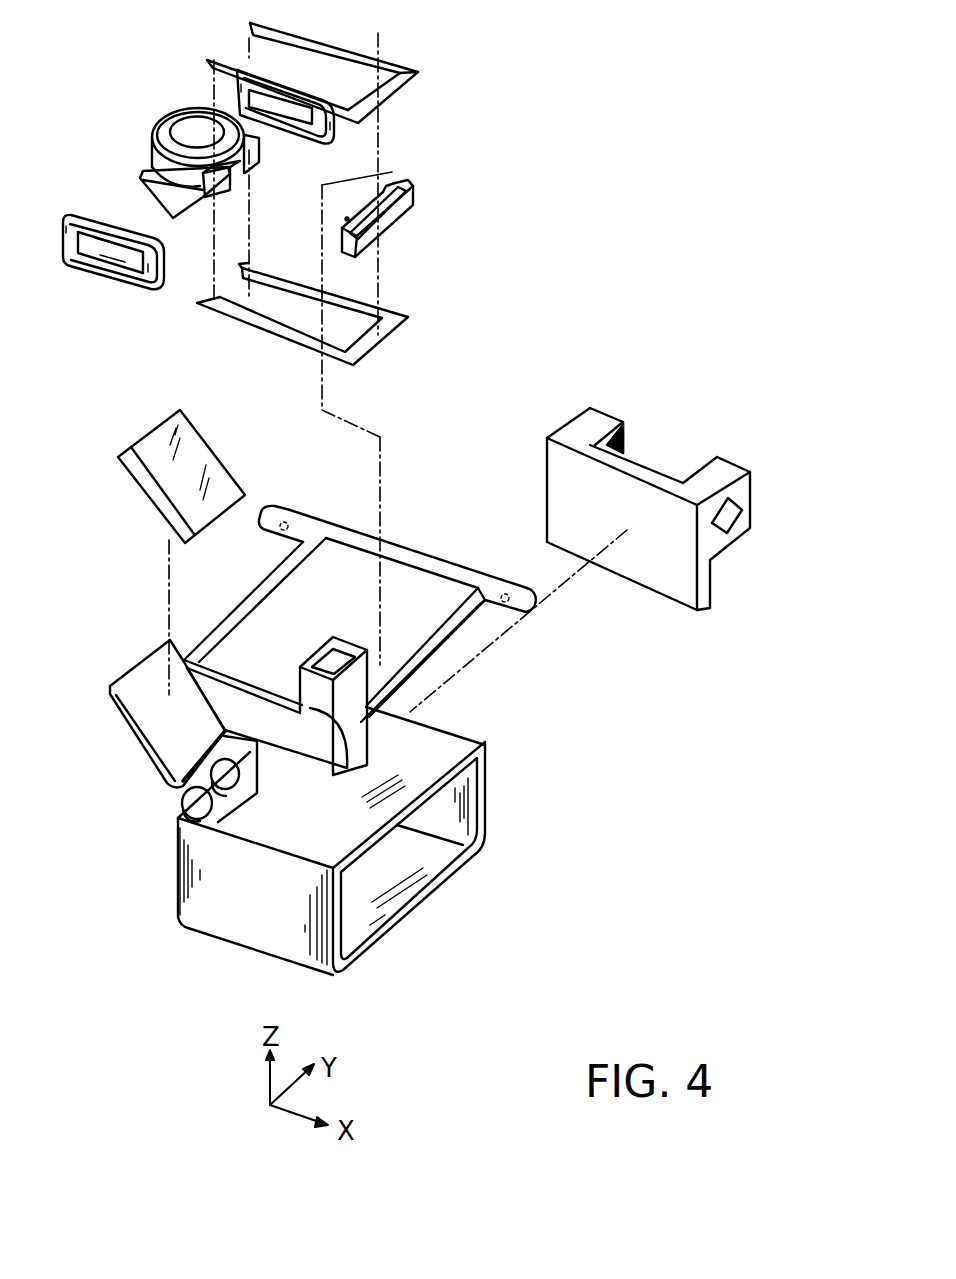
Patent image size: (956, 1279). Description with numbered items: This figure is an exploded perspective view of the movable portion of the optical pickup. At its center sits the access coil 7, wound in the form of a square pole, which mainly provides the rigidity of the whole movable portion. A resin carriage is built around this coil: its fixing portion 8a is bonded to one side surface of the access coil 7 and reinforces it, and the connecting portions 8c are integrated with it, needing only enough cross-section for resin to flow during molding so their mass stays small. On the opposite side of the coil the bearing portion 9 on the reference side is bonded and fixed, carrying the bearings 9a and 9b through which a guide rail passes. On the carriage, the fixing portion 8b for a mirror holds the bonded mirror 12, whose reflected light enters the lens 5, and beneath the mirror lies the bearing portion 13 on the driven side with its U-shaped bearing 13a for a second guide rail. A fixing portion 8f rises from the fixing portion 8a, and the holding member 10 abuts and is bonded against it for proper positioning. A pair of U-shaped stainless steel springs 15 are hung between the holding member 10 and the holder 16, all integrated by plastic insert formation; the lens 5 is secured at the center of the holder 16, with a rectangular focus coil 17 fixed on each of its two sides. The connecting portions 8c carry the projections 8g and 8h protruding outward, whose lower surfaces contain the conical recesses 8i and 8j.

The lens 5 is at (190, 128).
The access coil 7 is at (480, 815).
The fixing portion 8a is at (308, 745).
The fixing portion for a mirror 8b is at (138, 675).
The connecting portion 8c is at (228, 612).
The fixing portion 8f is at (319, 654).
The projecting portion 8g is at (273, 519).
The projecting portion 8h is at (528, 587).
The conical recess 8i is at (281, 536).
The conical recess 8j is at (515, 614).
The bearing portion on a reference side 9 is at (666, 483).
The bearing 9a is at (619, 421).
The bearing 9b is at (752, 478).
The holding member 10 is at (405, 217).
The mirror 12 is at (147, 480).
The bearing portion on a driven side 13 is at (183, 806).
The U-shaped bearing 13a is at (210, 762).
The spring 15 is at (380, 58).
The holder 16 is at (168, 139).
The focus coil 17 is at (313, 140).